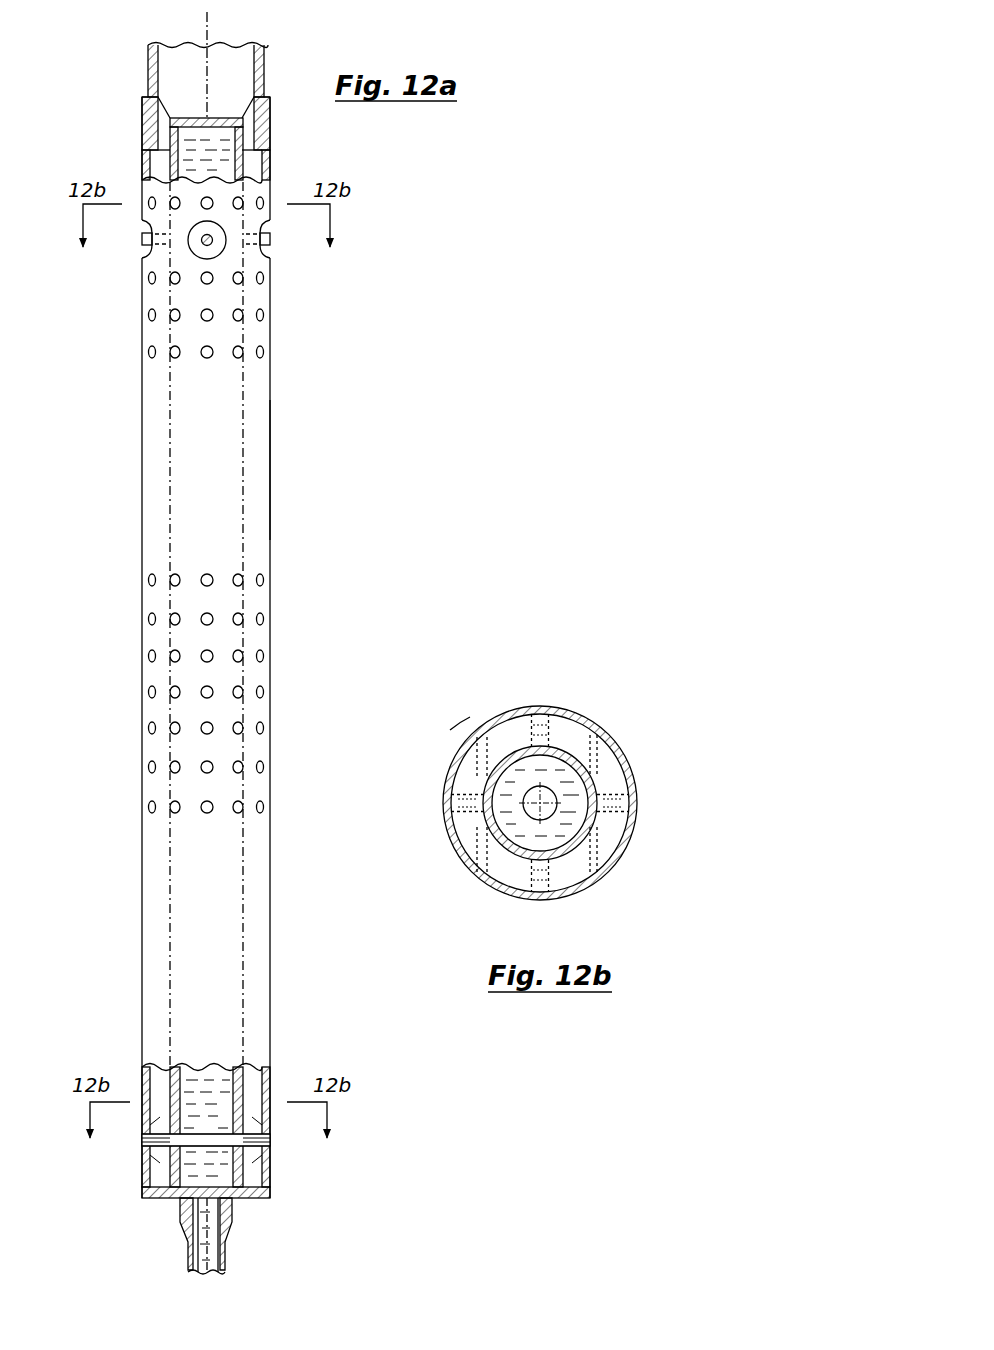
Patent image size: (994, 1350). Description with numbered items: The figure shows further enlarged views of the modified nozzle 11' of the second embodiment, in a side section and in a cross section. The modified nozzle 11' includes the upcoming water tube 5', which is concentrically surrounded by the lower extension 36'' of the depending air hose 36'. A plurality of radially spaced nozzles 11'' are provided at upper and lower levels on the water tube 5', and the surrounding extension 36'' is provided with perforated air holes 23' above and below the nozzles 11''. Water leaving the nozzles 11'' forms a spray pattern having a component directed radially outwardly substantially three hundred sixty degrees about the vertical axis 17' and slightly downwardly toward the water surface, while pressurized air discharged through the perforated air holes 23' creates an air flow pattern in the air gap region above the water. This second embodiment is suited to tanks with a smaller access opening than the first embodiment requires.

In FIG. 12A, the vertical axis 17' is at (241, 640).
In FIG. 12B, the vertical axis 17' is at (497, 859).
In FIG. 12A, the depending air hose 36' is at (158, 112).
In FIG. 12A, the upcoming water tube 5' is at (206, 652).
In FIG. 12B, the upcoming water tube 5' is at (540, 753).
In FIG. 12A, the lower extension 36'' is at (212, 685).
In FIG. 12B, the lower extension 36'' is at (565, 789).
In FIG. 12A, the radially spaced nozzles 11'' is at (210, 702).
In FIG. 12B, the radially spaced nozzles 11'' is at (534, 803).
In FIG. 12A, the perforated air holes 23' is at (209, 505).
In FIG. 12B, the perforated air holes 23' is at (533, 814).
In FIG. 12A, the modified nozzle 11' is at (317, 470).
In FIG. 12B, the modified nozzle 11' is at (441, 689).